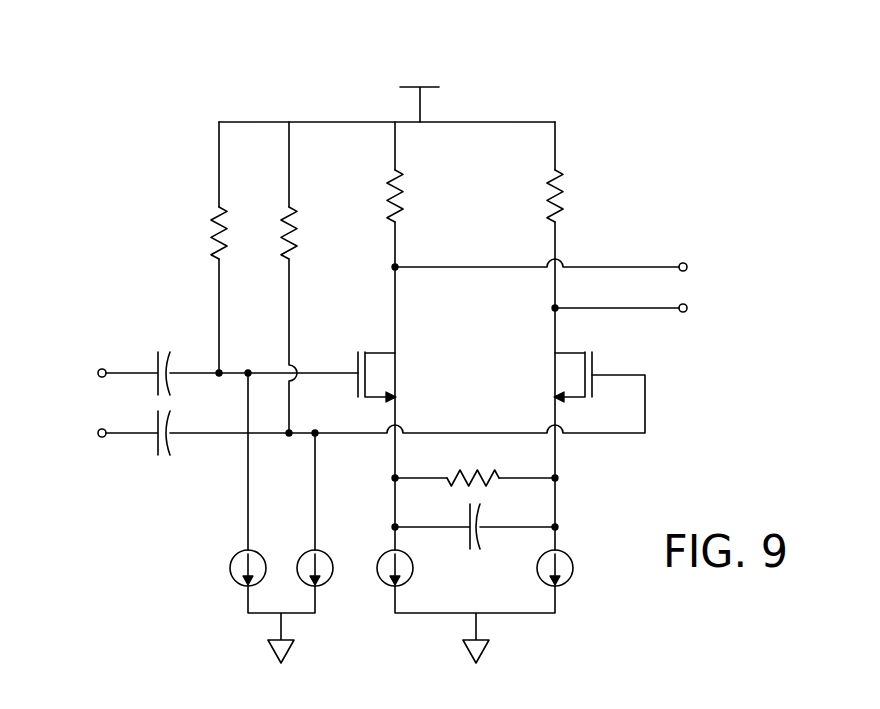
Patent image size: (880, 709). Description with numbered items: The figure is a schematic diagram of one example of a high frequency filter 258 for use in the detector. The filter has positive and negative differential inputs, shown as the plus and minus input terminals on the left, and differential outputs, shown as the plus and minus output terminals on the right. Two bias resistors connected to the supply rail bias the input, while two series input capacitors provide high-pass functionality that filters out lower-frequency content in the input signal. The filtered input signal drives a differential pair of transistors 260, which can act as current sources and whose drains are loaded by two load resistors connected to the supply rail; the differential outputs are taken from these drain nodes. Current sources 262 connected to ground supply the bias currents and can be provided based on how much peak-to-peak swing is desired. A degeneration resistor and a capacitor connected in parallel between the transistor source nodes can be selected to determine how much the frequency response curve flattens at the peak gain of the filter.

The high frequency filter 258 is at (389, 374).
The differential pair of transistors 260 is at (398, 374).
The current sources 262 is at (383, 579).